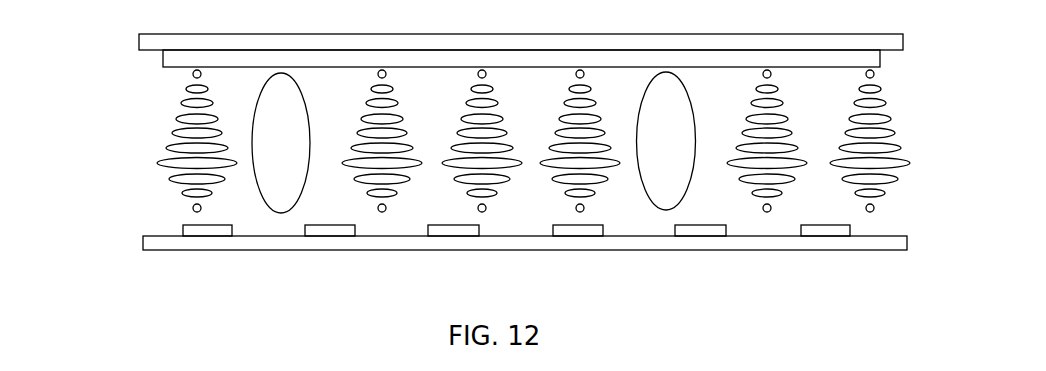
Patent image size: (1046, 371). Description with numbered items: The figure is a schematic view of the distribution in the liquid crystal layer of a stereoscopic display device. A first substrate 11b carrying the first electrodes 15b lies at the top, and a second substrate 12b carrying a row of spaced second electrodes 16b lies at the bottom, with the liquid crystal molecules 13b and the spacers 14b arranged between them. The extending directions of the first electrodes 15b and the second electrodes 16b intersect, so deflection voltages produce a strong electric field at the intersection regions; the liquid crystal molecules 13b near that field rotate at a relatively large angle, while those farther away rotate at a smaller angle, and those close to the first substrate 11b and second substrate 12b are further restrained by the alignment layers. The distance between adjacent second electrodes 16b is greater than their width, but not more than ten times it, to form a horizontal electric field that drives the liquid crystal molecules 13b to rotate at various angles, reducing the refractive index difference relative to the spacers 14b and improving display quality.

The first substrate 11b is at (139, 46).
The first electrodes 15b is at (166, 64).
The spacers 14b is at (258, 111).
The liquid crystal molecules 13b is at (183, 193).
The second electrodes 16b is at (183, 228).
The second substrate 12b is at (150, 249).